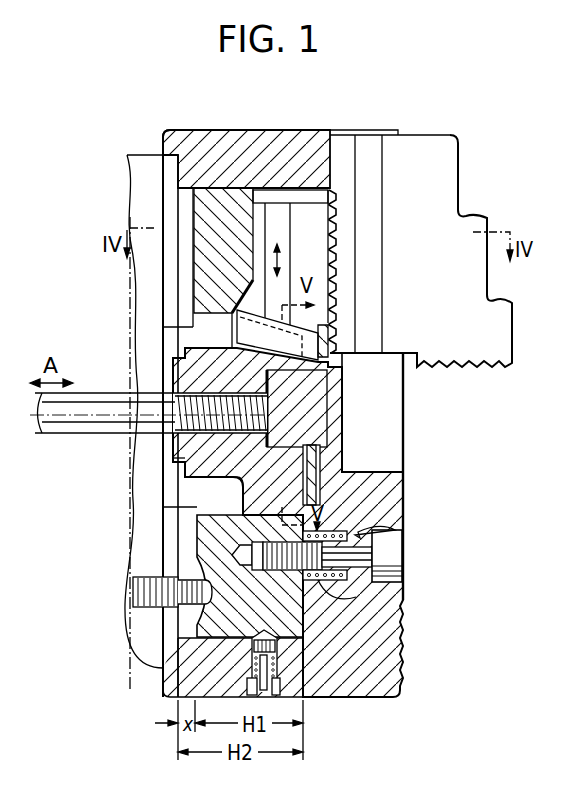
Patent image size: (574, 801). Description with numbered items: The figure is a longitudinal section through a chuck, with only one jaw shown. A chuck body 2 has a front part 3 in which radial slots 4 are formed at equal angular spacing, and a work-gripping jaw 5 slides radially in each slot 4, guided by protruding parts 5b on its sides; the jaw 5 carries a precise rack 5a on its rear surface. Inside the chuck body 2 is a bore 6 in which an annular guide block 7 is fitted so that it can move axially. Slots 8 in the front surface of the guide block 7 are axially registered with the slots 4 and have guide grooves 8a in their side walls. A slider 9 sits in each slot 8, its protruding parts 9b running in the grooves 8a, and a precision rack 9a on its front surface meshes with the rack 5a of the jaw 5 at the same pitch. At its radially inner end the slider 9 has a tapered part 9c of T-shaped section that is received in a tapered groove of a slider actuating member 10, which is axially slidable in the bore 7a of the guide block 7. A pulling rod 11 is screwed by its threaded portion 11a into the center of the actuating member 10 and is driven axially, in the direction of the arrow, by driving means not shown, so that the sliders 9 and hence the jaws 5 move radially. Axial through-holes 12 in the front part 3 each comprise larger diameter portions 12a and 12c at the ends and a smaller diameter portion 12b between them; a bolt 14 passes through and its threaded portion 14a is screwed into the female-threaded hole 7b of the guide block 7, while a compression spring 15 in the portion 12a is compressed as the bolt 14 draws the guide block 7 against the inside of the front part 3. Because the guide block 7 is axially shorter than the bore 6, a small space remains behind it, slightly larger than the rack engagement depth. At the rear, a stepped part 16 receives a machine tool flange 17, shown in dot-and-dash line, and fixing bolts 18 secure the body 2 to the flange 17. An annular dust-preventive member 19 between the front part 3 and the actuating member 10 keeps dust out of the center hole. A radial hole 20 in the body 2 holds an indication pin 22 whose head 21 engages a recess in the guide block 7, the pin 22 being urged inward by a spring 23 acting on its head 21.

The chuck body 2 is at (283, 143).
The front part 3 is at (403, 489).
The radial slot 4 is at (336, 135).
The work-gripping jaw 5 is at (395, 172).
The rack 5a is at (335, 262).
The protruding part 5b is at (368, 328).
The bore 6 is at (212, 185).
The guide block 7 is at (232, 188).
The bore of guide block 7a is at (197, 505).
The female-threaded hole 7b is at (252, 532).
The slot 8 is at (258, 188).
The guide groove 8a is at (277, 196).
The slider 9 is at (328, 240).
The precision rack 9a is at (335, 244).
The protruding part 9b is at (278, 235).
The tapered part 9c is at (275, 346).
The slider actuating member 10 is at (213, 362).
The pulling rod 11 is at (105, 405).
The threaded portion 11a is at (173, 459).
The through-hole 12 is at (433, 524).
The larger diameter portion 12a is at (338, 530).
The smaller diameter portion 12b is at (356, 574).
The larger diameter portion 12c is at (402, 577).
The bolt 14 is at (390, 563).
The threaded portion 14a is at (286, 562).
The compression spring 15 is at (314, 555).
The stepped part 16 is at (178, 650).
The flange 17 is at (145, 170).
The fixing bolt 18 is at (133, 592).
The dust-preventive member 19 is at (335, 463).
The hole 20 is at (277, 664).
The head 21 is at (268, 647).
The indication pin 22 is at (263, 697).
The spring 23 is at (277, 692).